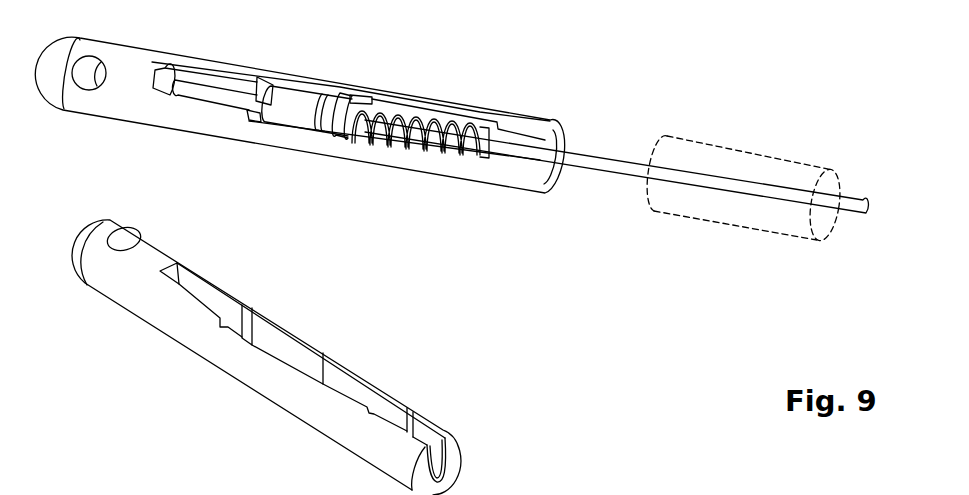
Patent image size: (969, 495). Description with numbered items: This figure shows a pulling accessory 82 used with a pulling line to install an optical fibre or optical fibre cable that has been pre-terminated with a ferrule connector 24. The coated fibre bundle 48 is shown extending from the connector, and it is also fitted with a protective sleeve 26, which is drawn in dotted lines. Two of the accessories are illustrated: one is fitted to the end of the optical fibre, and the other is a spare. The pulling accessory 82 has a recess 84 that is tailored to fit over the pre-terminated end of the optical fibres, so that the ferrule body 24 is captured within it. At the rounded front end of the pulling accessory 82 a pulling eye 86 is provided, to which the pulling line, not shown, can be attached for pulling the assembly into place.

The ferrule connector 24 is at (310, 117).
The protective sleeve 26 is at (760, 228).
The coated fibre bundle 48 is at (632, 170).
The pulling accessory 82 is at (223, 138).
The recess 84 is at (282, 341).
The pulling eye 86 is at (88, 76).